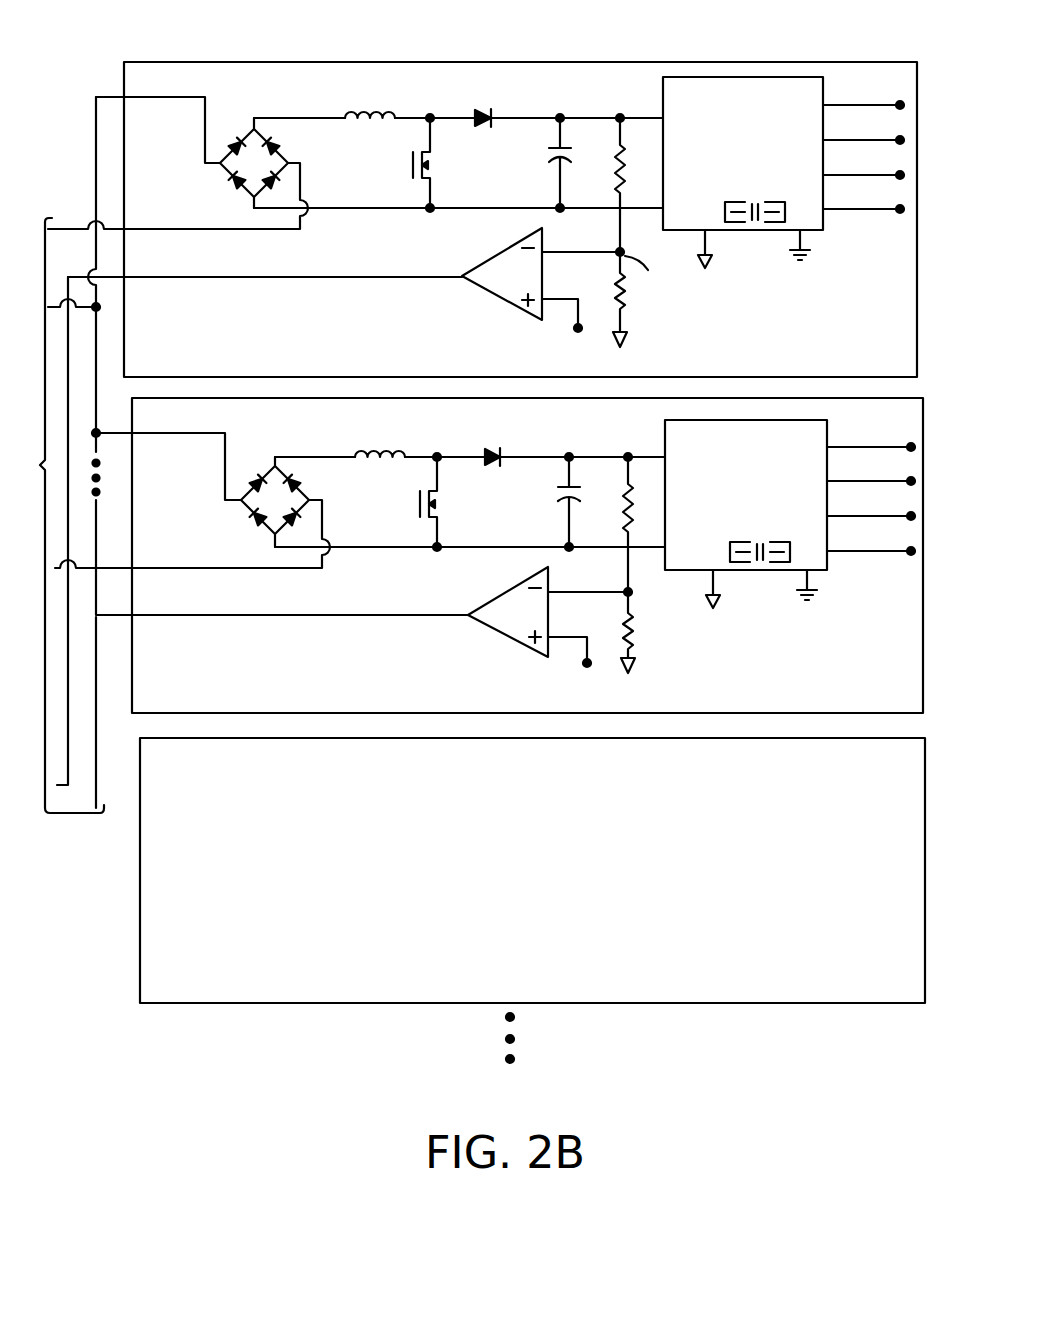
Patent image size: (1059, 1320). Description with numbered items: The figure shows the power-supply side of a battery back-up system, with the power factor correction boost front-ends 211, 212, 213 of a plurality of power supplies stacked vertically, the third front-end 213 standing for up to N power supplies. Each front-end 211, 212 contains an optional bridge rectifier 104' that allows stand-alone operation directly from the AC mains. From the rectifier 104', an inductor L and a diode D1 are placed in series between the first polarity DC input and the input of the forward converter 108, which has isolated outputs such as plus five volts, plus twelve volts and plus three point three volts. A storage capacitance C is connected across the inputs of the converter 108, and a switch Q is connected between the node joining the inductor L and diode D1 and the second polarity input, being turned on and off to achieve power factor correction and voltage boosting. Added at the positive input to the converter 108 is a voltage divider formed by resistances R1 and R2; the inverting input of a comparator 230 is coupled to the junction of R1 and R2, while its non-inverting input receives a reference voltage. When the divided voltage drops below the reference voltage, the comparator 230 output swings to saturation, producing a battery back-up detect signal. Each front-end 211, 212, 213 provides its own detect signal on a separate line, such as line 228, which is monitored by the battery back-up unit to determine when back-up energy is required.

The power factor correction boost front-end 211 is at (482, 196).
The power factor correction boost front-end 212 is at (132, 531).
The power factor correction boost front-end 213 is at (140, 903).
The bridge rectifier 104' is at (220, 167).
The forward converter 108 is at (823, 232).
The line 228 is at (247, 473).
The comparator 230 is at (500, 298).
The inductor L is at (365, 124).
The switch Q is at (436, 160).
The diode D1 is at (498, 108).
The storage capacitance C is at (548, 162).
The resistance R1 is at (636, 185).
The resistance R2 is at (608, 299).